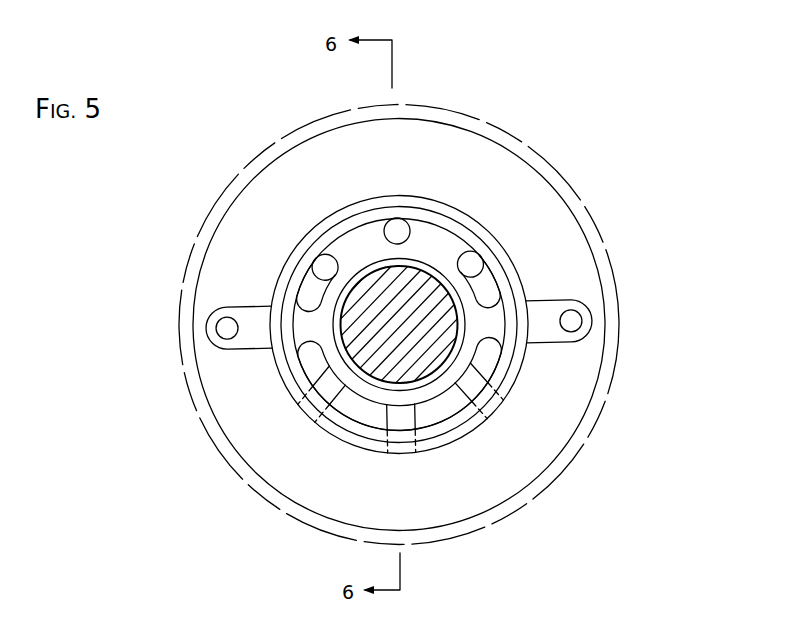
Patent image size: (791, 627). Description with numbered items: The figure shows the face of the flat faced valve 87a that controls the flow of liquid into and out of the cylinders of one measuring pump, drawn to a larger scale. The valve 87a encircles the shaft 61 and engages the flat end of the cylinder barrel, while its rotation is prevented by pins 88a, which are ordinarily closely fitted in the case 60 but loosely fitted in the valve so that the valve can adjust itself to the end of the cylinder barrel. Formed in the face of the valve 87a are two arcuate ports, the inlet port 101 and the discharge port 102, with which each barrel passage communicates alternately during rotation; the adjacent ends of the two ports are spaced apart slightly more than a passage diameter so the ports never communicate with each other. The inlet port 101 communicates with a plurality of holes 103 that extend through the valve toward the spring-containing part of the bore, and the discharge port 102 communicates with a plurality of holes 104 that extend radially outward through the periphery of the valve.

The case 60 is at (188, 370).
The shaft 61 is at (405, 323).
The flat faced valve 87a is at (427, 197).
The pins 88a is at (227, 320).
The arcuate port 101 is at (350, 229).
The arcuate port 102 is at (366, 422).
The holes 103 is at (324, 261).
The holes 104 is at (327, 386).